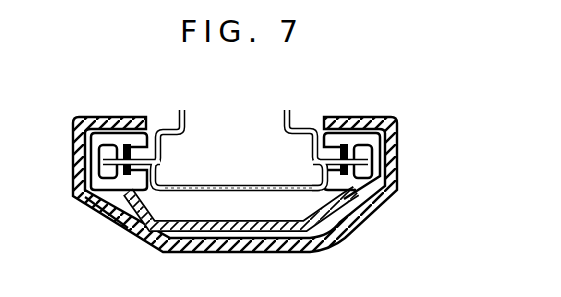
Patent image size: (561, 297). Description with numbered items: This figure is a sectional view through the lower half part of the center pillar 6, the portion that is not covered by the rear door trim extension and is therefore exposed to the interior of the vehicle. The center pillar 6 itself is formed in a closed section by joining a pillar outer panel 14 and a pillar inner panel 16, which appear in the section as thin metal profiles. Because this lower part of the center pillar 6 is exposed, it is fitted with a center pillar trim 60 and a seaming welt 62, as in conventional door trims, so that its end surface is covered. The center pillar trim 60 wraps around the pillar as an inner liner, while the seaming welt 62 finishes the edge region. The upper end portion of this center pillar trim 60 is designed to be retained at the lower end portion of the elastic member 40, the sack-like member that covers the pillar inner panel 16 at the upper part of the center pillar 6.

The center pillar 6 is at (235, 120).
The pillar outer panel 14 is at (305, 136).
The pillar inner panel 16 is at (213, 184).
The elastic member 40 is at (298, 247).
The center pillar trim 60 is at (195, 230).
The seaming welt 62 is at (104, 204).